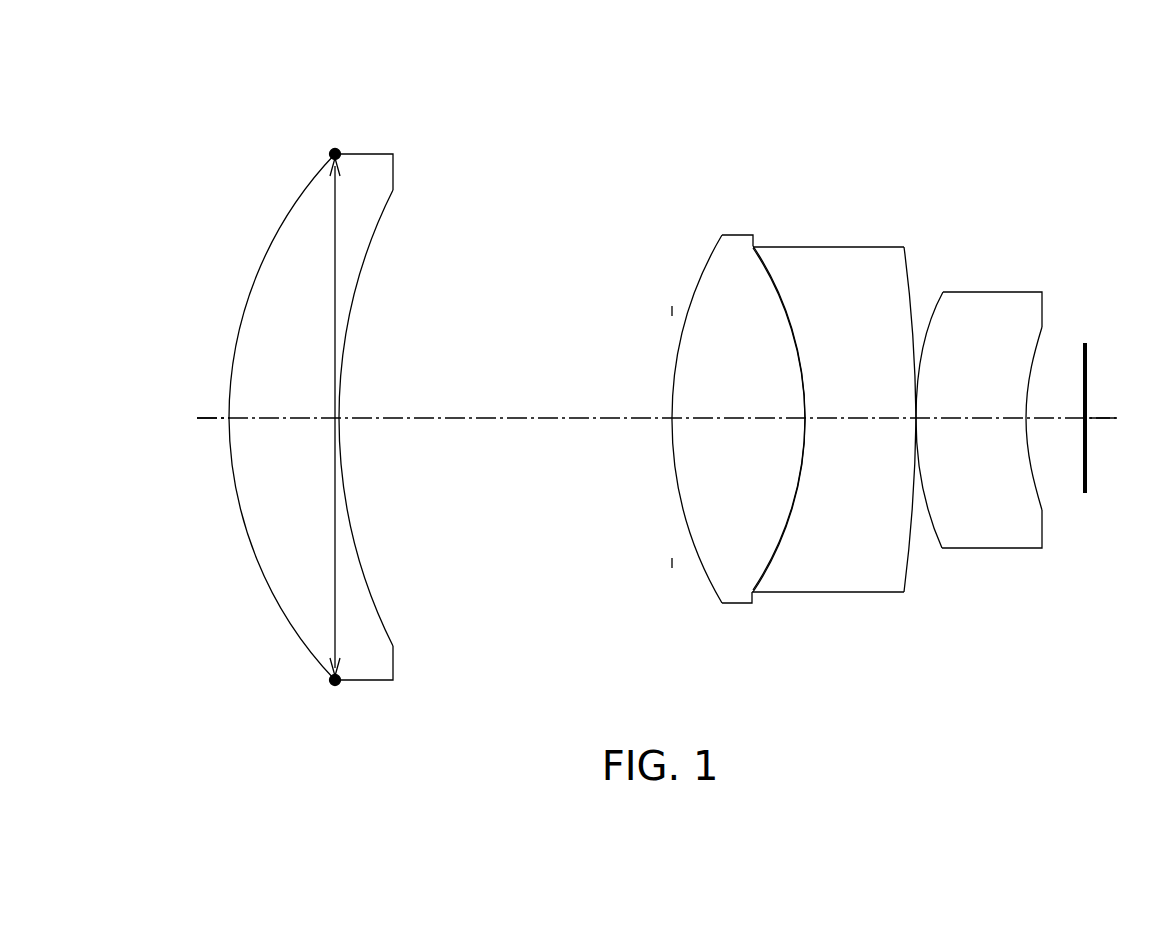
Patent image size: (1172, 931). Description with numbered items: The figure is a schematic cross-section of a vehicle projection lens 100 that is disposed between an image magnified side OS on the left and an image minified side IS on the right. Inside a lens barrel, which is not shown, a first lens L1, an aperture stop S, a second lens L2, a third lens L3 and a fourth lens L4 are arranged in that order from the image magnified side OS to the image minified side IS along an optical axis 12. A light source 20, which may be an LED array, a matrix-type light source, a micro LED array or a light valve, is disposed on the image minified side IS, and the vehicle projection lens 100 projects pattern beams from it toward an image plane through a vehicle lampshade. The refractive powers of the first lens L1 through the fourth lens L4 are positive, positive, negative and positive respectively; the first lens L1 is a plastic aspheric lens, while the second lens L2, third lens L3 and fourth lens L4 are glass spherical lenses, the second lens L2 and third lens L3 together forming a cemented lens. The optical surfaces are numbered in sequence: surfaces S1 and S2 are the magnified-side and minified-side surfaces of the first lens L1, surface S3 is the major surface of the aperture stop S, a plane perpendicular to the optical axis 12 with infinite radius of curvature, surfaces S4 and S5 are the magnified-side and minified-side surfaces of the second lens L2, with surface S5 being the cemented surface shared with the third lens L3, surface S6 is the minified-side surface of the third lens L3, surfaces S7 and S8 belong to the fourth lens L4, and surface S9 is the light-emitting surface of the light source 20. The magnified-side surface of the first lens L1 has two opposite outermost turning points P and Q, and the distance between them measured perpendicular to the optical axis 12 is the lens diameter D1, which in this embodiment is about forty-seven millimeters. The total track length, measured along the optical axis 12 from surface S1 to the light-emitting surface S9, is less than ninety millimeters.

The vehicle projection lens 100 is at (168, 75).
The optical axis 12 is at (500, 418).
The light source 20 is at (1110, 406).
The first lens L1 is at (345, 375).
The second lens L2 is at (724, 414).
The third lens L3 is at (854, 408).
The fourth lens L4 is at (1004, 398).
The aperture stop S is at (672, 312).
The magnified-side surface of the first lens S1 is at (282, 612).
The minified-side surface of the first lens S2 is at (363, 573).
The major surface of the aperture stop S3 is at (673, 560).
The magnified-side surface of the second lens S4 is at (707, 573).
The cemented surface S5 is at (772, 562).
The minified-side surface of the third lens S6 is at (904, 563).
The magnified-side surface of the fourth lens S7 is at (927, 525).
The minified-side surface of the fourth lens S8 is at (1033, 478).
The light-emitting surface S9 is at (1088, 470).
The turning point P is at (334, 139).
The turning point Q is at (334, 700).
The lens diameter D1 is at (319, 417).
The image magnified side OS is at (178, 426).
The image minified side IS is at (1136, 426).